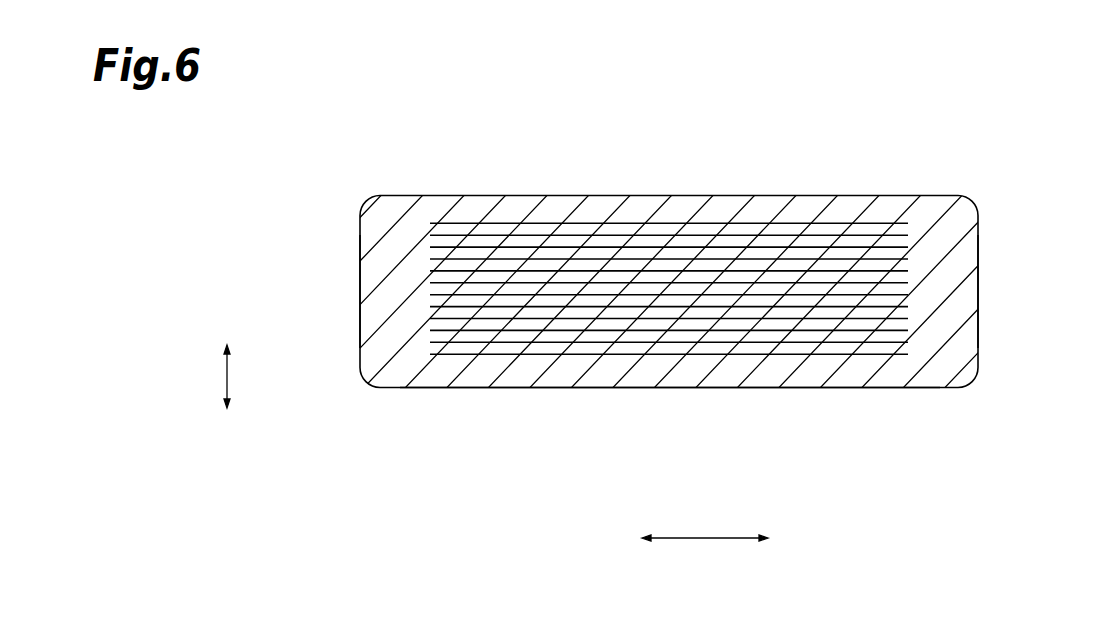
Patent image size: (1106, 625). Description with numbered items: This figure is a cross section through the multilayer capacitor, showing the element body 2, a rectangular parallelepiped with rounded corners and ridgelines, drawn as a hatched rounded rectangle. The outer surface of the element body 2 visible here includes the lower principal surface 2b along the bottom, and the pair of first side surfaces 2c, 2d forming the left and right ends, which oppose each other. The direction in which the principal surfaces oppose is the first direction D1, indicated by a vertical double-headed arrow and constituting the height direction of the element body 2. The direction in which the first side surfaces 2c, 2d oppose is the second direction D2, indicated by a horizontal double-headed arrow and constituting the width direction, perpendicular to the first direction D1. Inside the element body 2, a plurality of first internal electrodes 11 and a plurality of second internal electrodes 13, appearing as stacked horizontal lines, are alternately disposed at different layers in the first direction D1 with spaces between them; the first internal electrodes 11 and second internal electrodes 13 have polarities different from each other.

The element body 2 is at (727, 367).
The principal surface 2b is at (497, 390).
The first side surface 2c is at (357, 311).
The first side surface 2d is at (980, 257).
The first internal electrode 11 is at (661, 247).
The second internal electrode 13 is at (668, 357).
The first direction D1 is at (226, 378).
The second direction D2 is at (716, 540).